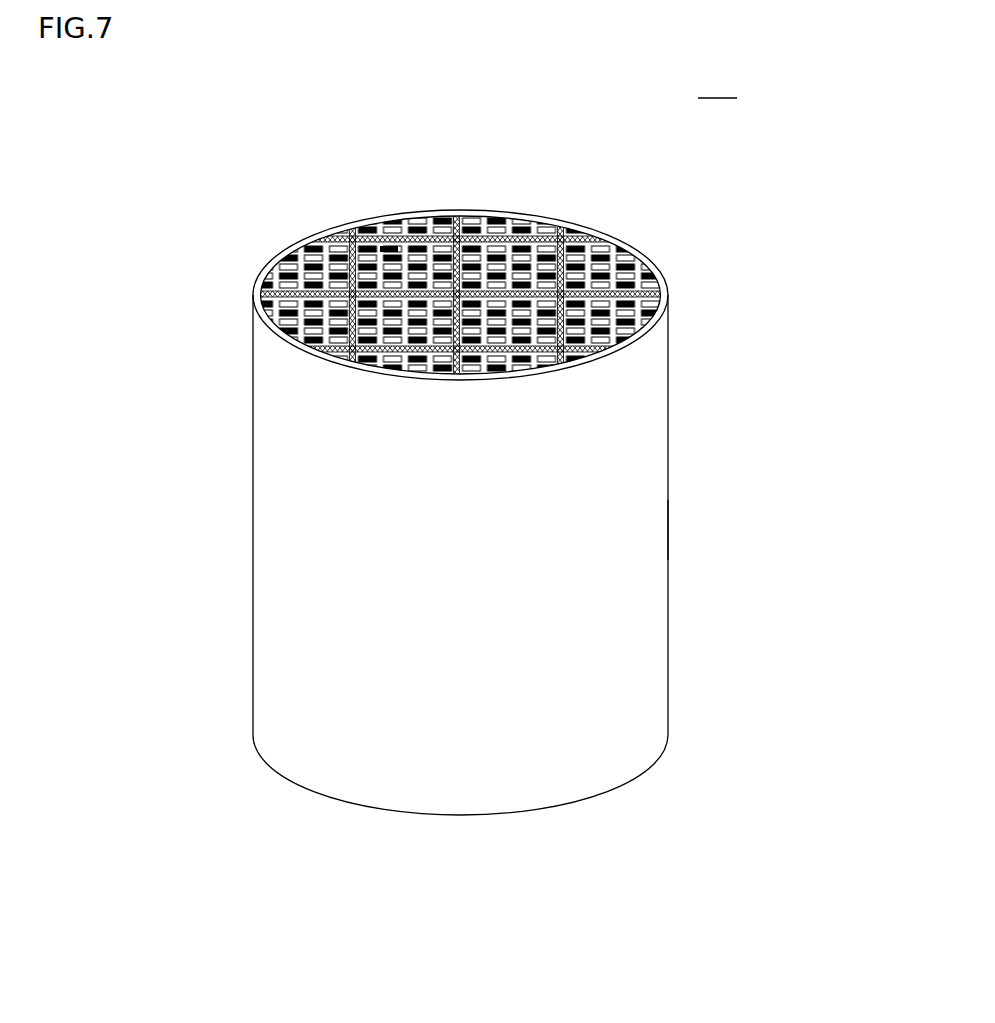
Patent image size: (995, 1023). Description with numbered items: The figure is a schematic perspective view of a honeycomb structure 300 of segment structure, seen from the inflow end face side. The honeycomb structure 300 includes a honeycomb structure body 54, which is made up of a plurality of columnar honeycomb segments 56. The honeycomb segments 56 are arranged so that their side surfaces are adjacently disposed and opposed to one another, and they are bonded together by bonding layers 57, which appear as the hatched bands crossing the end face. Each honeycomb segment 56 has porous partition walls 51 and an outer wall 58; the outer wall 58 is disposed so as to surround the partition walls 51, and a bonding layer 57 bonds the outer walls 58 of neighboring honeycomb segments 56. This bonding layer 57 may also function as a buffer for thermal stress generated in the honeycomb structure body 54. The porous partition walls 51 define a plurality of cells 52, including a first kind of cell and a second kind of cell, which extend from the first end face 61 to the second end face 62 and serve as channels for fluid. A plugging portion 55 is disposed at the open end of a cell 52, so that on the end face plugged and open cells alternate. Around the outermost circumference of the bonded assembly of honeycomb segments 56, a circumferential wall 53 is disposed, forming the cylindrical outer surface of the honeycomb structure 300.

The honeycomb structure 300 is at (720, 87).
The partition wall 51 is at (508, 262).
The cell 52 is at (551, 263).
The circumferential wall 53 is at (638, 435).
The honeycomb structure body 54 is at (670, 528).
The plugging portion 55 is at (388, 249).
The honeycomb segment 56 is at (533, 323).
The bonding layer 57 is at (454, 290).
The outer wall 58 is at (405, 348).
The first end face 61 is at (288, 242).
The second end face 62 is at (264, 776).